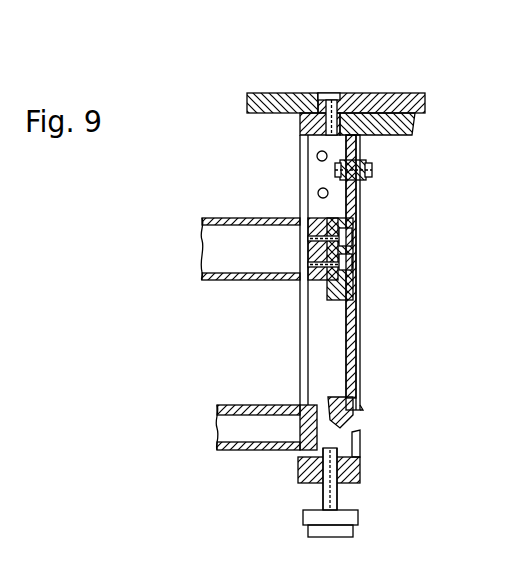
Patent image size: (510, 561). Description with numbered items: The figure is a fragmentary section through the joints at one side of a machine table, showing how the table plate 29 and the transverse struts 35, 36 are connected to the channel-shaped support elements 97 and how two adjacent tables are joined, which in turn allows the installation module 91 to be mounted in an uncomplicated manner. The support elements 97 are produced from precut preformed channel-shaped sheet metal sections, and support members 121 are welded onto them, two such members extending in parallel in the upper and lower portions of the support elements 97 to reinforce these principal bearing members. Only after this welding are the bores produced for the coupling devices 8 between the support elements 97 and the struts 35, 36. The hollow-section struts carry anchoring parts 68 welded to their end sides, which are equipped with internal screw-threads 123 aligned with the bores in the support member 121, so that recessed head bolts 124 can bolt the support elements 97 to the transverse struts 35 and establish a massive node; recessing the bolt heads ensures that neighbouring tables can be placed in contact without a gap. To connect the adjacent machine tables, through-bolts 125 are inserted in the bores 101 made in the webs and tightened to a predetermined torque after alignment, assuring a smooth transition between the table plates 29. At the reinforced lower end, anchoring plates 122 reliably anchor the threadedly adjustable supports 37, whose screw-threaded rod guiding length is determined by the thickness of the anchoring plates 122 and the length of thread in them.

The coupling means 8 is at (366, 232).
The table plate 29 is at (263, 93).
The transverse struts 35 is at (218, 258).
The transverse struts 36 is at (257, 425).
The threadedly adjustable supports 37 is at (345, 517).
The anchoring parts 68 is at (300, 283).
The installation module 91 is at (300, 203).
The channel-shaped support elements 97 is at (300, 125).
The bores 101 is at (328, 157).
The support members 121 is at (340, 300).
The anchoring plates 122 is at (299, 128).
The internal screw-threads 123 is at (312, 193).
The recessed head bolts 124 is at (353, 242).
The through-bolts 125 is at (368, 171).